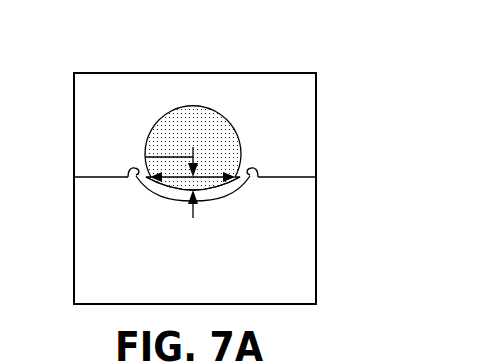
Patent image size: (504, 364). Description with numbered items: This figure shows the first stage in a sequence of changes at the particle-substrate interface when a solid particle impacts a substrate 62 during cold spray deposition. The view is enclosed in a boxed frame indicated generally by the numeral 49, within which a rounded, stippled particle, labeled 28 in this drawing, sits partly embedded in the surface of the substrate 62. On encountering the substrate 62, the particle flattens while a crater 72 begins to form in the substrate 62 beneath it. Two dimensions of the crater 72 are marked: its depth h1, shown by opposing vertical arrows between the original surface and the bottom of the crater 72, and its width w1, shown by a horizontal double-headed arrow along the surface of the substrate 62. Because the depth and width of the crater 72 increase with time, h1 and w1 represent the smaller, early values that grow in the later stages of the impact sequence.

The solder joint assembly 49 is at (140, 50).
The solder ball 28 is at (213, 136).
The crater 72 is at (158, 186).
The substrate 62 is at (278, 178).
The crater depth h1 is at (145, 157).
The crater width w1 is at (215, 172).